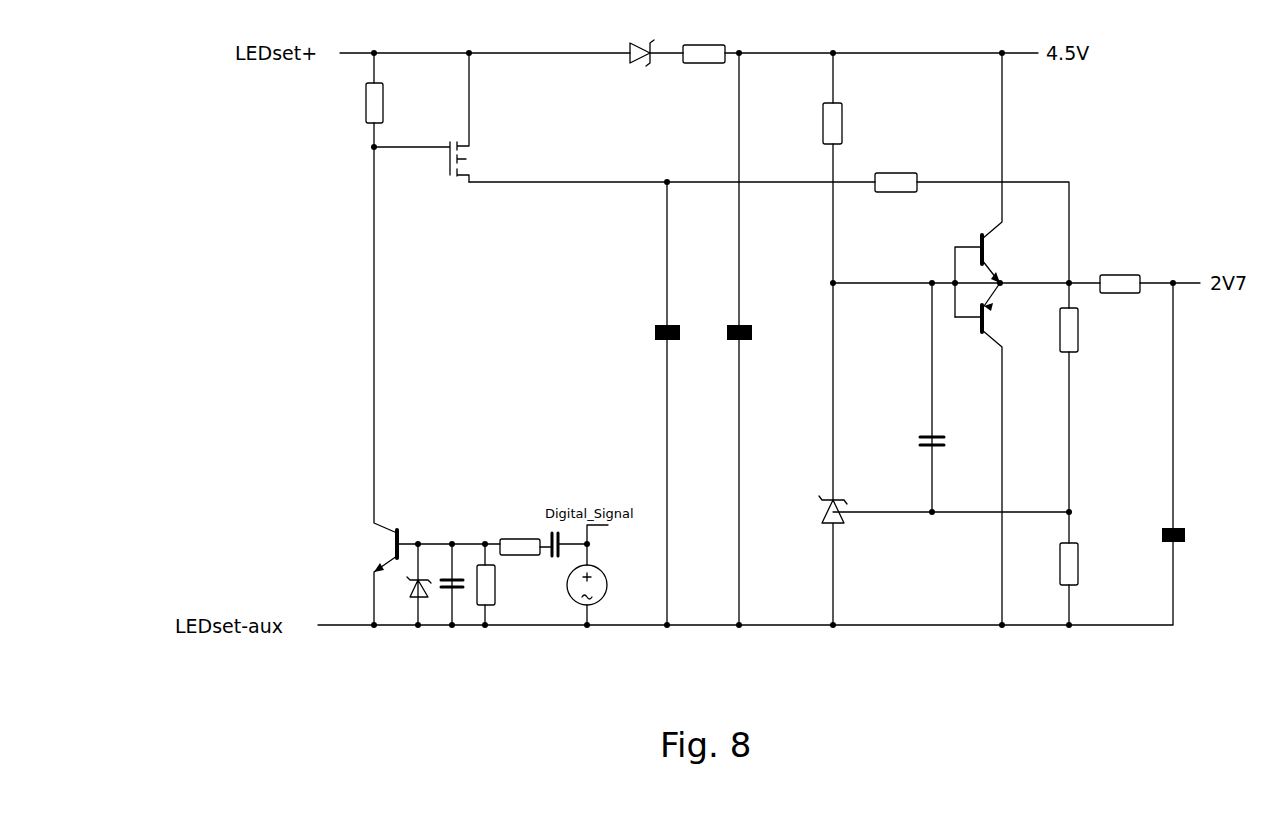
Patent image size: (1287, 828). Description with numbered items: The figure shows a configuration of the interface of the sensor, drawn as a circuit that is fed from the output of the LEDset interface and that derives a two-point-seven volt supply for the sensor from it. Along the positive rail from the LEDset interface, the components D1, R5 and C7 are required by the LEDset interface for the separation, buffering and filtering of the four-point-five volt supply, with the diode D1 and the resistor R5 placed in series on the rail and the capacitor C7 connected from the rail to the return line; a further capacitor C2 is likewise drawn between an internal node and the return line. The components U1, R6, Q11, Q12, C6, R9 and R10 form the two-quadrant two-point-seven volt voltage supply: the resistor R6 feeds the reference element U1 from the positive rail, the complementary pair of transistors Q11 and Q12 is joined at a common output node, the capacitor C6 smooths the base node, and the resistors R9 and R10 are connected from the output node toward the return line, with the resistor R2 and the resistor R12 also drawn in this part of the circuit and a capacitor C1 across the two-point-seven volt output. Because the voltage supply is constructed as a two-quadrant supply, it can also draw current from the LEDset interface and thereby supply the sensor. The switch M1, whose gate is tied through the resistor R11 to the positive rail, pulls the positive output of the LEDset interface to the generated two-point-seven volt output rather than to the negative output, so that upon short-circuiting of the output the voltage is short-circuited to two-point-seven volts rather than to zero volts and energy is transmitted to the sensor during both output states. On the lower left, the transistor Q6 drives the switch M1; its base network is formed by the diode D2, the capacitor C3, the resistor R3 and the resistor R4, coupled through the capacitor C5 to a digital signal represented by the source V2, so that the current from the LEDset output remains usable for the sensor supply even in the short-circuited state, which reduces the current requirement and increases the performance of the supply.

The resistor R11 is at (396, 100).
The switch M1 is at (443, 117).
The component D1 is at (644, 42).
The component R5 is at (704, 41).
The component R6 is at (849, 276).
The resistor R2 is at (896, 170).
The capacitor C2 is at (651, 403).
The component C7 is at (756, 339).
The component Q11 is at (999, 185).
The component Q12 is at (999, 454).
The resistor R12 is at (1119, 271).
The component R9 is at (1084, 397).
The component R10 is at (1091, 568).
The component C6 is at (947, 397).
The component U1 is at (817, 560).
The capacitor C1 is at (1191, 536).
The transistor Q6 is at (420, 386).
The zener diode D2 is at (408, 584).
The capacitor C3 is at (459, 596).
The resistor R3 is at (501, 584).
The resistor R4 is at (526, 535).
The capacitor C5 is at (557, 556).
The signal voltage source V2 is at (604, 584).